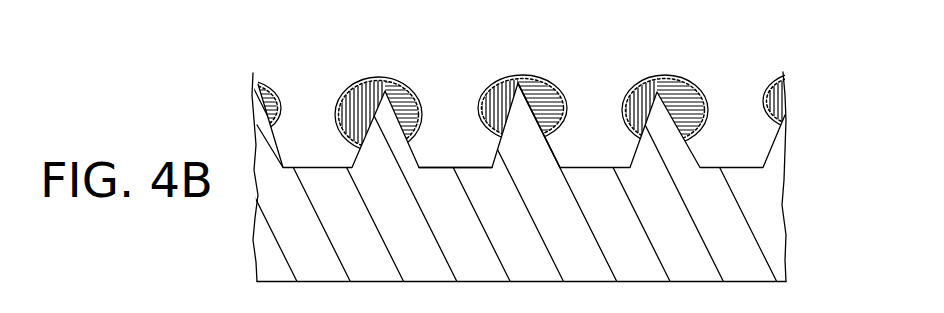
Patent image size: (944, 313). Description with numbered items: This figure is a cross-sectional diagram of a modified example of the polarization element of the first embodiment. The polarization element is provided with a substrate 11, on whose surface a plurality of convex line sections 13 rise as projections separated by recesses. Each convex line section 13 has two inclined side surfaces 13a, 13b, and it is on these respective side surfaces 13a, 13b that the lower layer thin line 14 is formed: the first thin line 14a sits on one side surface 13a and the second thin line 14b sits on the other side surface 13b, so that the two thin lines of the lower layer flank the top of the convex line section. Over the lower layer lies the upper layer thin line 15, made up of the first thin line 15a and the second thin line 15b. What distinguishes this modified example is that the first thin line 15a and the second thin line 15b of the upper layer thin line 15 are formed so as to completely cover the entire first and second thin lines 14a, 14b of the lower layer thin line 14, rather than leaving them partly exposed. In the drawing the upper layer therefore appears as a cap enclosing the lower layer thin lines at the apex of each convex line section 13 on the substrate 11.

The substrate 11 is at (776, 240).
The convex line section 13 is at (530, 153).
The side surface 13a is at (560, 163).
The side surface 13b is at (488, 164).
The lower layer thin line 14 is at (413, 76).
The first thin line 14a is at (678, 102).
The second thin line 14b is at (640, 77).
The upper layer thin line 15 is at (370, 70).
The first thin line 15a is at (705, 100).
The second thin line 15b is at (627, 90).